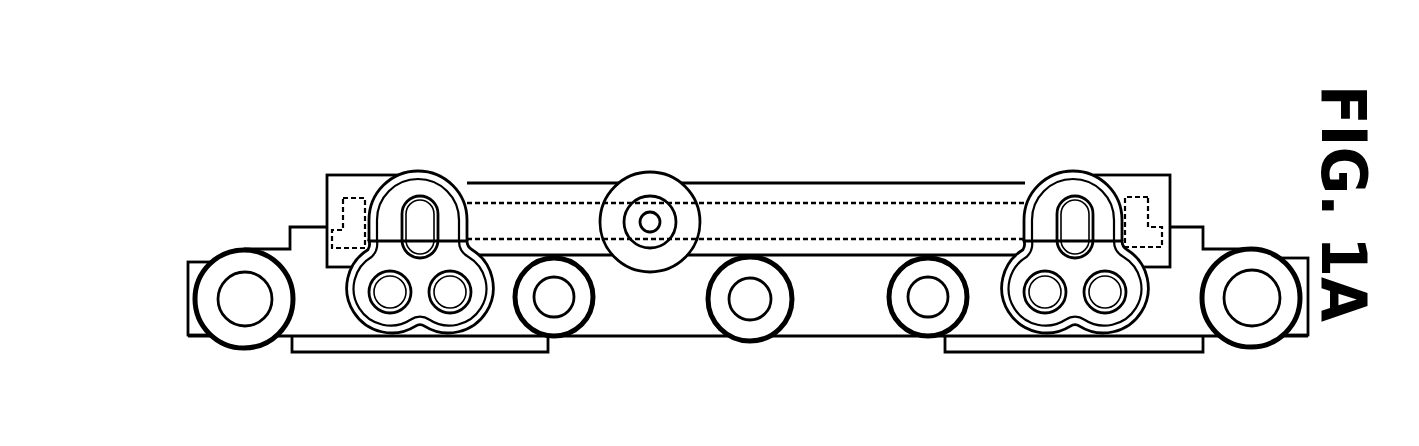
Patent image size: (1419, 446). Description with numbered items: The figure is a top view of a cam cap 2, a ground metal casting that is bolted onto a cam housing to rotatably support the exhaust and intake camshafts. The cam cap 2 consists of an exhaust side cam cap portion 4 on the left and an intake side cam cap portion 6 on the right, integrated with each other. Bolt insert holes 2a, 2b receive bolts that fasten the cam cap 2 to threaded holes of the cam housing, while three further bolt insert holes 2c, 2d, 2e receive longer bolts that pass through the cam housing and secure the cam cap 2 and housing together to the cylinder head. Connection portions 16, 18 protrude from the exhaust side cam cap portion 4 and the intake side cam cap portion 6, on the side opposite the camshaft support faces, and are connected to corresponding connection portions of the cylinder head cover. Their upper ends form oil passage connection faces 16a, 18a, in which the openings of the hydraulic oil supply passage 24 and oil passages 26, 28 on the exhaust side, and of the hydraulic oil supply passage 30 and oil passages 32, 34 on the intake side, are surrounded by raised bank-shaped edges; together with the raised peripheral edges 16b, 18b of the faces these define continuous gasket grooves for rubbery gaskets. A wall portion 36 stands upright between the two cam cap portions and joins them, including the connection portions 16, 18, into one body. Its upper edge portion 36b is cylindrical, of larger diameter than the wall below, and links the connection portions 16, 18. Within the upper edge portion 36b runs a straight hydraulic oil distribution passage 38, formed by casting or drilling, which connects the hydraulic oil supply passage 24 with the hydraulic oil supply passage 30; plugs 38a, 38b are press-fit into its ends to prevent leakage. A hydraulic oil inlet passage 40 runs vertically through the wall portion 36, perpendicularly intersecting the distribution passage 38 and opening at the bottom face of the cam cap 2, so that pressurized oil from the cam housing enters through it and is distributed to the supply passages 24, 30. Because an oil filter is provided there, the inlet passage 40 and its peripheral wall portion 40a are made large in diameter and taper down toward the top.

The cam cap 2 is at (1207, 143).
The bolt insert hole 2a is at (560, 303).
The bolt insert hole 2b is at (926, 303).
The bolt insert hole 2c is at (242, 308).
The bolt insert hole 2d is at (745, 318).
The bolt insert hole 2e is at (1252, 310).
The exhaust side cam cap portion 4 is at (510, 344).
The intake side cam cap portion 6 is at (988, 345).
The connection portion 16 is at (444, 176).
The oil passage connection face 16a is at (413, 172).
The peripheral edge 16b is at (356, 297).
The connection portion 18 is at (1057, 172).
The oil passage connection face 18a is at (1088, 172).
The peripheral edge 18b is at (1137, 298).
The hydraulic oil supply passage 24 is at (424, 219).
The oil passage 26 is at (390, 298).
The oil passage 28 is at (450, 298).
The hydraulic oil supply passage 30 is at (1070, 219).
The oil passage 32 is at (1044, 298).
The oil passage 34 is at (1105, 298).
The wall portion 36 is at (828, 183).
The upper edge portion 36b is at (757, 197).
The hydraulic oil distribution passage 38 is at (897, 220).
The plug 38a is at (349, 226).
The plug 38b is at (1146, 220).
The hydraulic oil inlet passage 40 is at (645, 249).
The peripheral wall portion 40a is at (650, 183).